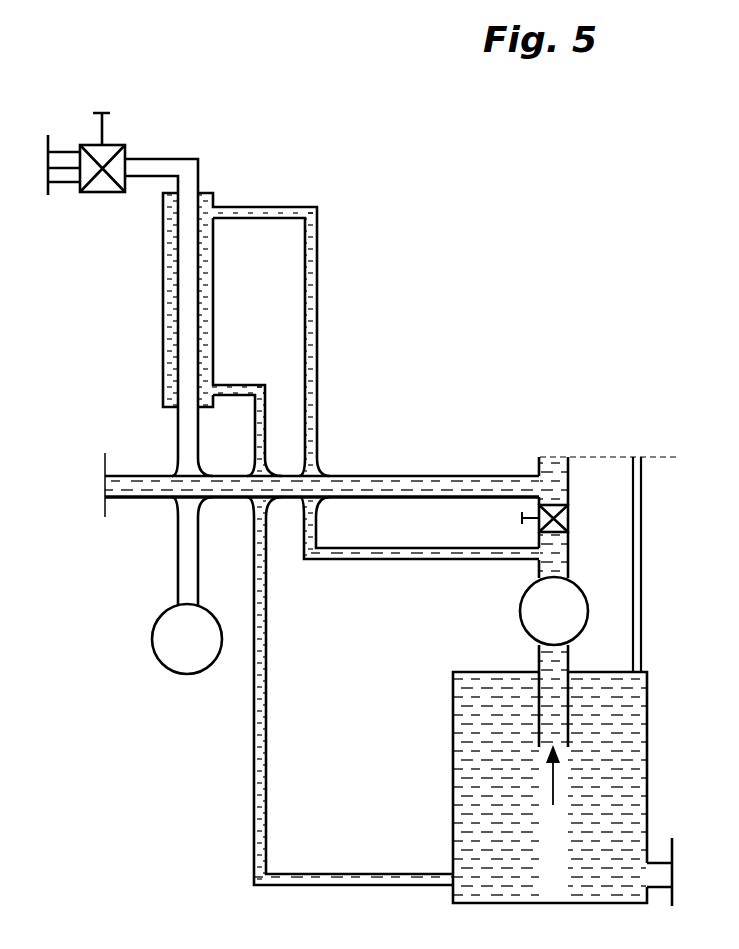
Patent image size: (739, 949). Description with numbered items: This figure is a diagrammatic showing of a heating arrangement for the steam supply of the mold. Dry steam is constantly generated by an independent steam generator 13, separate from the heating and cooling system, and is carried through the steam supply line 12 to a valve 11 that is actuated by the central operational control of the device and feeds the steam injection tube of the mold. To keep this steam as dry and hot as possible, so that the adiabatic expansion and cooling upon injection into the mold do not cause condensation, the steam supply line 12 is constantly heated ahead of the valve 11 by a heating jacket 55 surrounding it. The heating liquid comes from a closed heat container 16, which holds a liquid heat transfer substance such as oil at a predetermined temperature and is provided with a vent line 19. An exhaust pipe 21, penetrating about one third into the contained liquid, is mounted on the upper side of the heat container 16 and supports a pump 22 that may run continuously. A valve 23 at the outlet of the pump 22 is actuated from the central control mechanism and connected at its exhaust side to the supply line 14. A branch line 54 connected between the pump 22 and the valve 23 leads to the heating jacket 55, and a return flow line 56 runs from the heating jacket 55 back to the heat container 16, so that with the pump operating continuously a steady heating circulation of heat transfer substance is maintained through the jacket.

The valve 11 is at (98, 183).
The steam supply line 12 is at (212, 473).
The steam generator 13 is at (187, 637).
The supply line 14 is at (396, 494).
The heat container 16 is at (467, 785).
The vent line 19 is at (638, 457).
The exhaust pipe 21 is at (538, 658).
The pump 22 is at (530, 612).
The valve 23 is at (560, 512).
The branch line 54 is at (397, 553).
The heating jacket 55 is at (207, 295).
The return flow line 56 is at (262, 694).